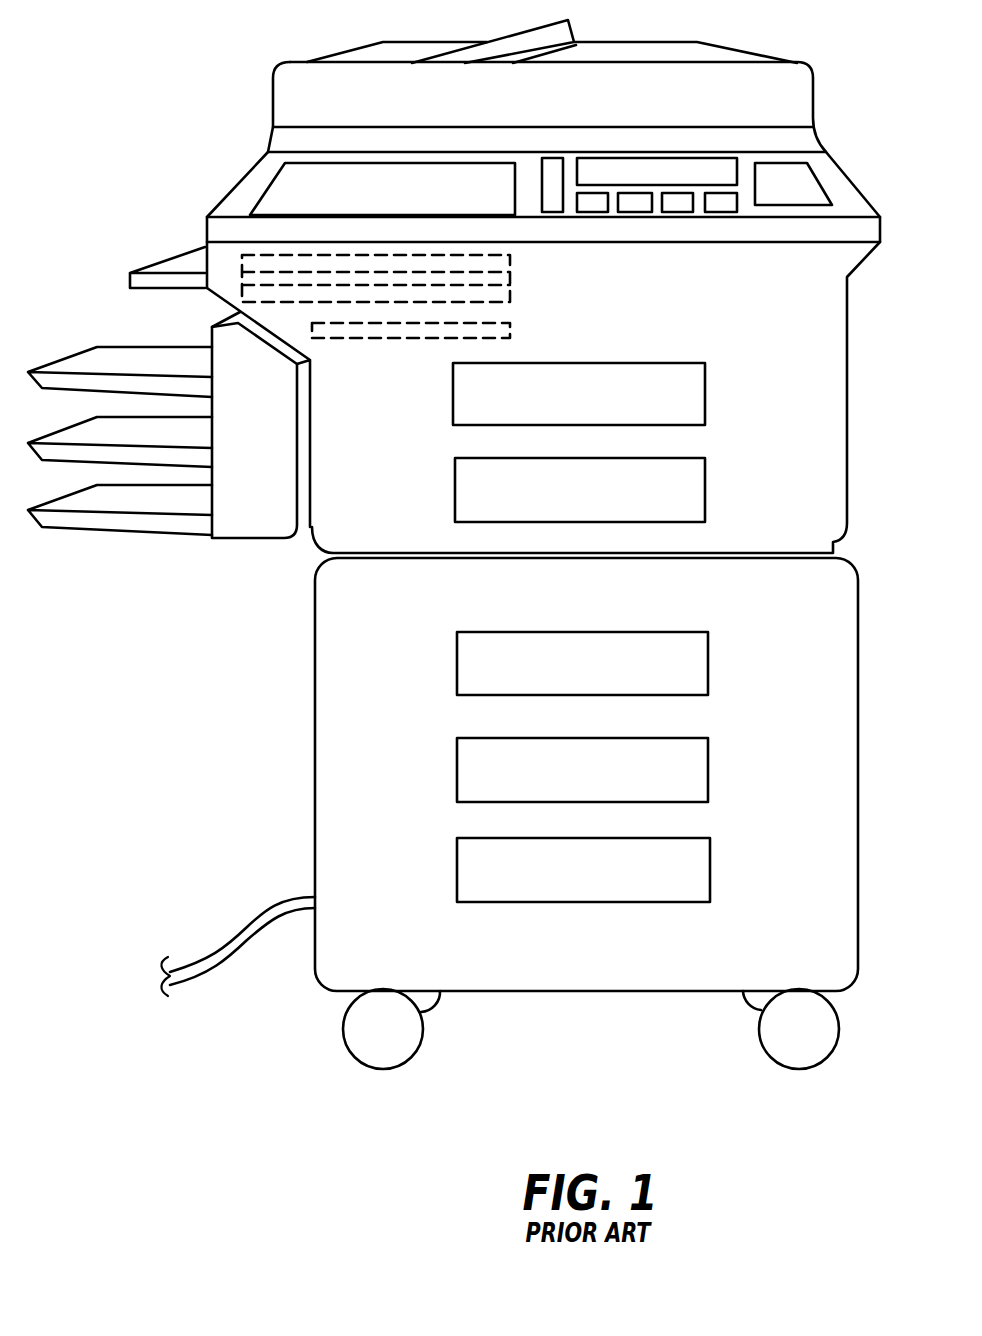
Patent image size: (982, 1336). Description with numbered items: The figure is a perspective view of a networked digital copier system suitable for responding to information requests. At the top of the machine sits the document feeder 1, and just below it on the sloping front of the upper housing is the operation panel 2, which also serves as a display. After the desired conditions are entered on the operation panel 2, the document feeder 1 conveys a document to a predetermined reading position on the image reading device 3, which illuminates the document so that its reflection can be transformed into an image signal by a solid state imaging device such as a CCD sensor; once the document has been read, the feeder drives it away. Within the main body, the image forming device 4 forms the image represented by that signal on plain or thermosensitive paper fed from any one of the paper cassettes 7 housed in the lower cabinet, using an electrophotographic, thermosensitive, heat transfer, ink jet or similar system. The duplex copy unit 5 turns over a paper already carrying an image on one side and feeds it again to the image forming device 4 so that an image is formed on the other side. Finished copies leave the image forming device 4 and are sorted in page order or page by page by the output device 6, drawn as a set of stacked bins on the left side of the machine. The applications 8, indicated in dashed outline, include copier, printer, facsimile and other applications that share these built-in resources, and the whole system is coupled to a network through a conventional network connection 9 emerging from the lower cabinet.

The document feeder 1 is at (793, 78).
The operation panel 2 is at (287, 164).
The image reading device 3 is at (231, 170).
The image forming device 4 is at (705, 370).
The duplex copy unit 5 is at (705, 487).
The output device 6 is at (138, 538).
The paper cassettes 7 is at (708, 653).
The applications 8 is at (546, 293).
The network connection 9 is at (233, 932).